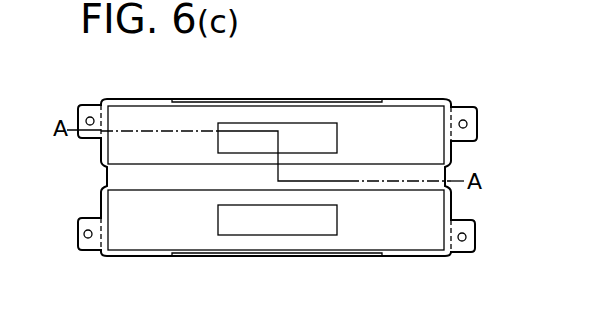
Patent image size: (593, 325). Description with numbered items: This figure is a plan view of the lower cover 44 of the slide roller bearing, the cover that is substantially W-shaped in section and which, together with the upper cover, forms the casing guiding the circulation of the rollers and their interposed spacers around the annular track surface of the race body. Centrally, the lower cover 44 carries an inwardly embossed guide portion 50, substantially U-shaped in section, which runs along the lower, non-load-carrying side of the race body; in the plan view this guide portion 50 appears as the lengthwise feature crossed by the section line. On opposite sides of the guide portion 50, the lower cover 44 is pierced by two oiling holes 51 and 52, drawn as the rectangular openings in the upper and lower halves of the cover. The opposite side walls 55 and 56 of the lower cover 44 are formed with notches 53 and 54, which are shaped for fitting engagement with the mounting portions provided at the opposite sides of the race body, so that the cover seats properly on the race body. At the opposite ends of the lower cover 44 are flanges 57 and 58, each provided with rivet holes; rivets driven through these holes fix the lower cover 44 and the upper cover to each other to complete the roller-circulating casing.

The lower cover 44 is at (99, 152).
The guide portion 50 is at (390, 166).
The oiling hole 51 is at (328, 134).
The oiling hole 52 is at (326, 217).
The notch 53 is at (355, 99).
The notch 54 is at (262, 257).
The side wall 55 is at (149, 99).
The side wall 56 is at (142, 257).
The flange 57 is at (90, 107).
The flange 58 is at (466, 107).